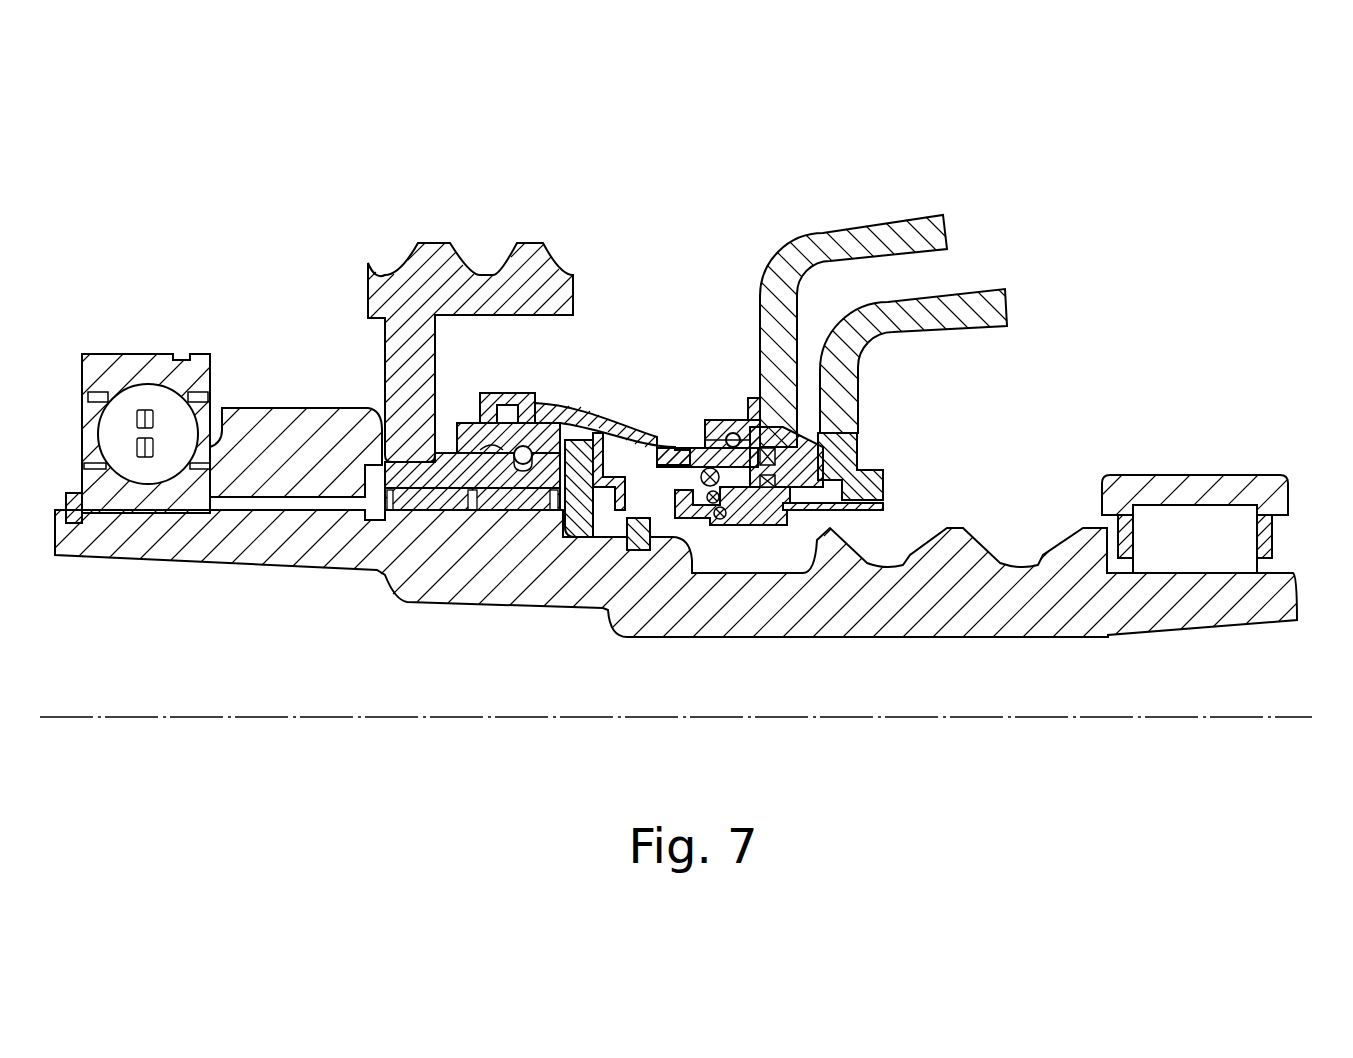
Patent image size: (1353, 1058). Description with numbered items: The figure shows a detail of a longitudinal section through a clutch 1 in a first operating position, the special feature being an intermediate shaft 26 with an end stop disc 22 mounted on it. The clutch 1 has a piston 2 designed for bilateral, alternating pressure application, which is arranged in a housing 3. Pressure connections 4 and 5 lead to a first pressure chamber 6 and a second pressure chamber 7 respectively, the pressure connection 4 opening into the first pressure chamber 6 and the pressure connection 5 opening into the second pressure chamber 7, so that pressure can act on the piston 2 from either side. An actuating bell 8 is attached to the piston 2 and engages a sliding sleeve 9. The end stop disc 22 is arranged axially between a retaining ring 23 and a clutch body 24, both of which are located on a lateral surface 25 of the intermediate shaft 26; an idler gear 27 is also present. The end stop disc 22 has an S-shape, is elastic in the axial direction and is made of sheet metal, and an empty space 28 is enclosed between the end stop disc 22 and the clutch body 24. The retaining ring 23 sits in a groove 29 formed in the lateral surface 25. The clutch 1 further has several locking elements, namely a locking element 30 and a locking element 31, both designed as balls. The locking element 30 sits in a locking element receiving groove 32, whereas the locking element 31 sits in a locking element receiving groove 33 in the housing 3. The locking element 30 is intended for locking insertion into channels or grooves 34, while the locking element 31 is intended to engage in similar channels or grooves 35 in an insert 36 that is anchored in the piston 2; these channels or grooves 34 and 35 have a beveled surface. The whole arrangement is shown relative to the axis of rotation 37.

The clutch 1 is at (912, 110).
The piston 2 is at (672, 442).
The housing 3 is at (857, 444).
The pressure connection 4 is at (875, 235).
The pressure connection 5 is at (945, 318).
The first pressure chamber 6 is at (848, 462).
The second pressure chamber 7 is at (745, 500).
The actuating bell 8 is at (548, 400).
The sliding sleeve 9 is at (472, 437).
The end stop disc 22 is at (582, 530).
The retaining ring 23 is at (608, 540).
The clutch body 24 is at (519, 500).
The lateral surface 25 is at (672, 530).
The intermediate shaft 26 is at (837, 602).
The idler gear 27 is at (490, 292).
The empty space 28 is at (550, 500).
The groove 29 is at (646, 562).
The locking element 30 is at (598, 417).
The locking element 31 is at (752, 415).
The locking element receiving groove 32 is at (517, 497).
The locking element receiving groove 33 is at (728, 420).
The channels/grooves 34 is at (525, 432).
The channels/grooves 35 is at (735, 440).
The insert 36 is at (705, 445).
The axis of rotation 37 is at (1262, 716).